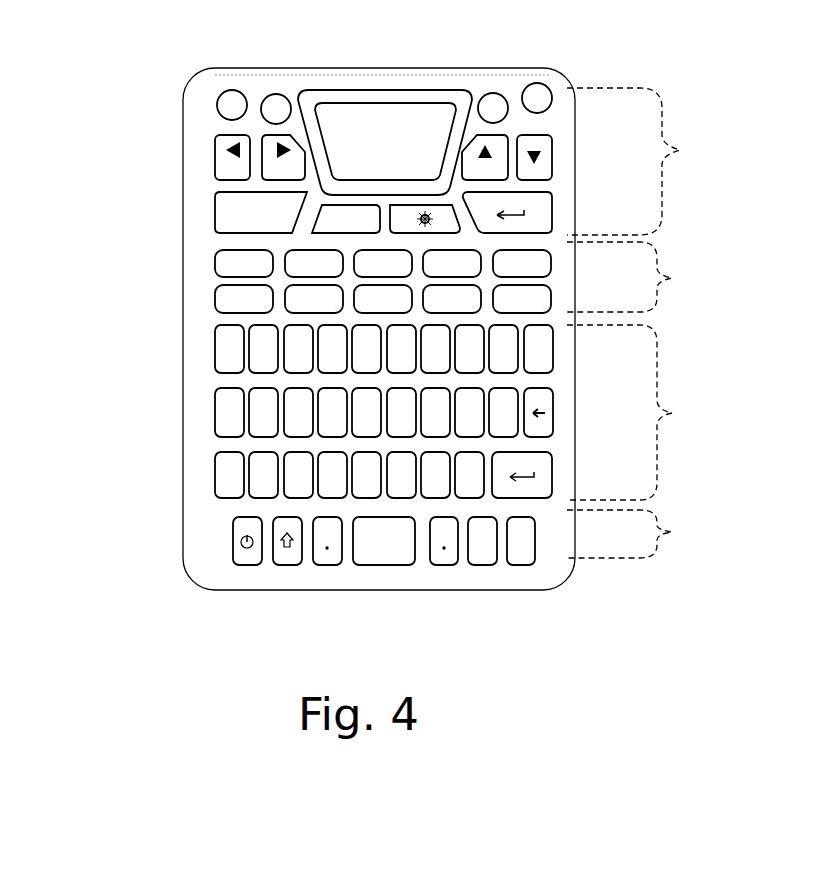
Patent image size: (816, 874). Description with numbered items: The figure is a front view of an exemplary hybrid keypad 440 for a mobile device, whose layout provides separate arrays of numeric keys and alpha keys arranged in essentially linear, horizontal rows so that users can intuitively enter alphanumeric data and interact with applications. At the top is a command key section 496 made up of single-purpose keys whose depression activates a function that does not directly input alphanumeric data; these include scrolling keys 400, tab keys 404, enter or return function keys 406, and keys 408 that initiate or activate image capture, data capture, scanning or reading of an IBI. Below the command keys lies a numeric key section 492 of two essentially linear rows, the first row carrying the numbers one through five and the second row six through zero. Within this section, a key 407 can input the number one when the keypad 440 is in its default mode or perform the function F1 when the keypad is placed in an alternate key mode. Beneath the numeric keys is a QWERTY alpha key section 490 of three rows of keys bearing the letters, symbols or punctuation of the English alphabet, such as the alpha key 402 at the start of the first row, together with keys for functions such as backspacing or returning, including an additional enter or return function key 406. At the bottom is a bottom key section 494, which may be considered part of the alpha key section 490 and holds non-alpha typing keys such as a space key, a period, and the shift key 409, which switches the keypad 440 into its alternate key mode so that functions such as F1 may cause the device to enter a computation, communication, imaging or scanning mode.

The scrolling keys 400 is at (226, 142).
The hybrid keypad 440 is at (190, 135).
The alphabetic key 402 is at (218, 343).
The tab keys 404 is at (224, 213).
The enter or return function keys 406 is at (532, 208).
The key 407 is at (223, 262).
The keys to initiate image capture, data capture, scanning or reading 408 is at (413, 110).
The shift key 409 is at (281, 559).
The QWERTY alpha key section 490 is at (376, 396).
The numeric key section 492 is at (380, 277).
The bottom key section 494 is at (450, 567).
The command key section 496 is at (680, 150).